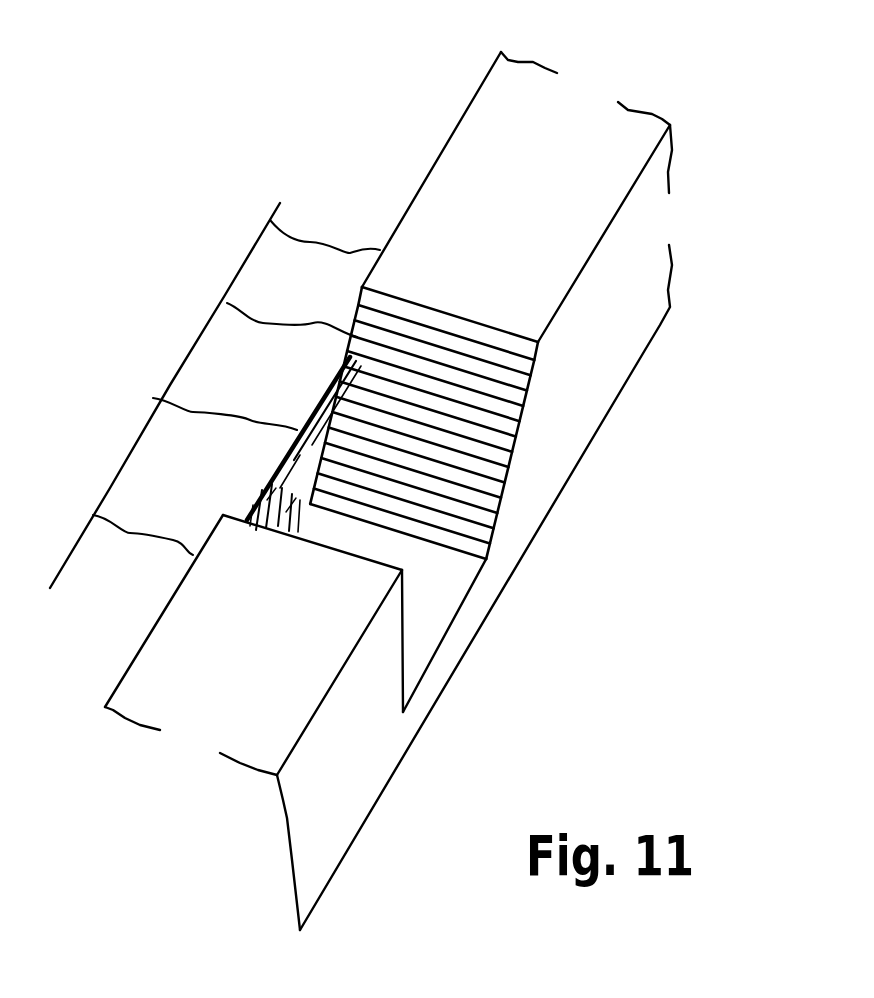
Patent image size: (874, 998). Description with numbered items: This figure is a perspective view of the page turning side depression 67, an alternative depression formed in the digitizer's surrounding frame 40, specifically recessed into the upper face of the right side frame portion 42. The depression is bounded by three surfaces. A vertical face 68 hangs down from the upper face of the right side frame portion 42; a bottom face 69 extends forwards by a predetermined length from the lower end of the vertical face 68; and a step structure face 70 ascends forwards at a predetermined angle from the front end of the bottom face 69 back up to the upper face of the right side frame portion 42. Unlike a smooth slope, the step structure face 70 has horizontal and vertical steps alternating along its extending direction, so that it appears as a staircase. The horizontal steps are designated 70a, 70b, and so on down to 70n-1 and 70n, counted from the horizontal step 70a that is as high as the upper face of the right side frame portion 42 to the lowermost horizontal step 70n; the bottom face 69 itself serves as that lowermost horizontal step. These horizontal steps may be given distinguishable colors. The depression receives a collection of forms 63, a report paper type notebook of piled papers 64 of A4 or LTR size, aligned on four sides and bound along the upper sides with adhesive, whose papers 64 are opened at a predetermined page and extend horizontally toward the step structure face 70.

The surrounding frame 40 is at (567, 149).
The right side frame portion 42 is at (300, 707).
The collection of forms 63 is at (152, 405).
The papers 64 is at (215, 353).
The page turning side depression 67 is at (442, 595).
The vertical face 68 is at (402, 672).
The bottom face 69 is at (422, 647).
The step structure face 70 is at (527, 466).
The horizontal step 70a is at (525, 361).
The horizontal step 70b is at (512, 392).
The horizontal step 70n-1 is at (477, 540).
The horizontal step 70n is at (467, 582).